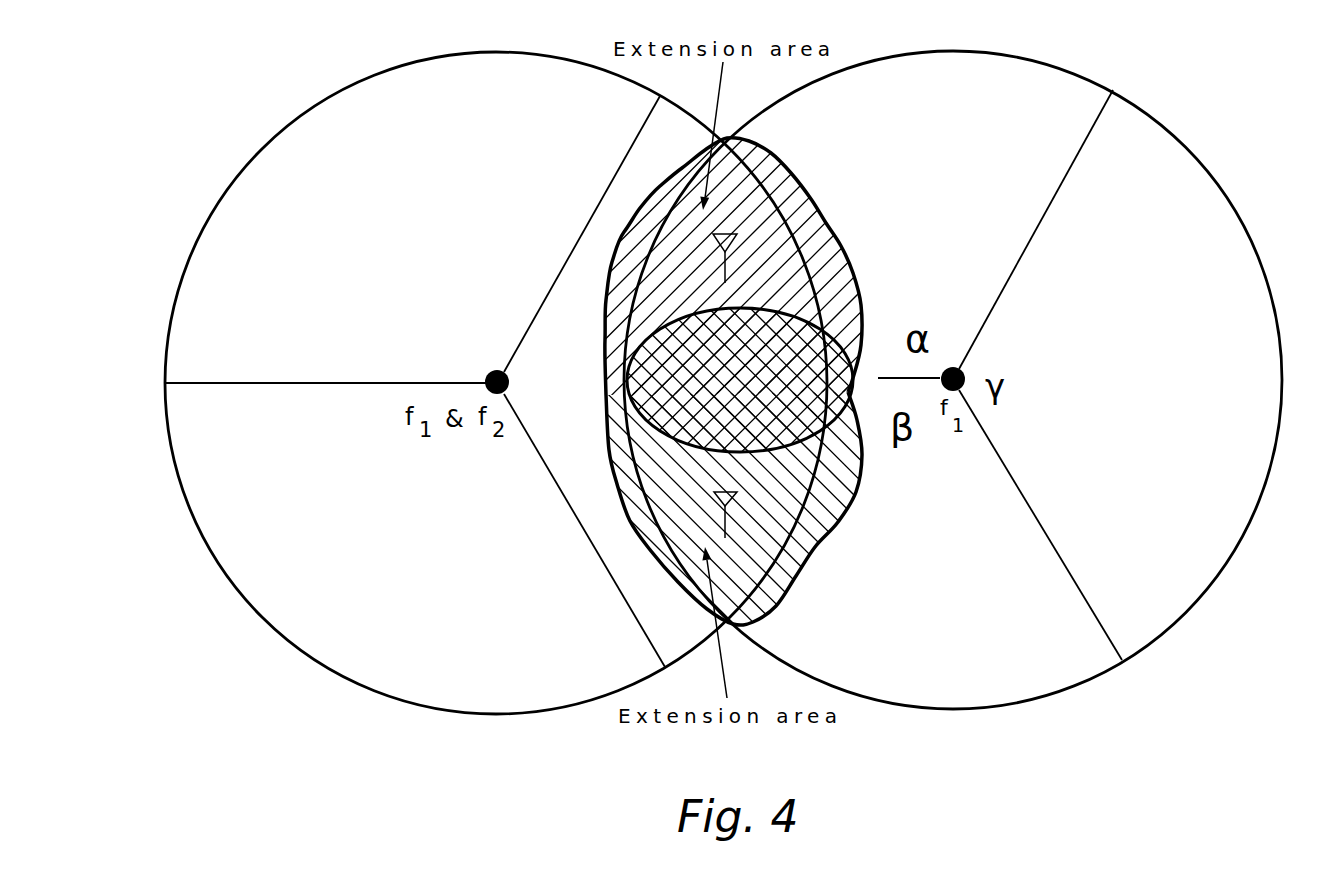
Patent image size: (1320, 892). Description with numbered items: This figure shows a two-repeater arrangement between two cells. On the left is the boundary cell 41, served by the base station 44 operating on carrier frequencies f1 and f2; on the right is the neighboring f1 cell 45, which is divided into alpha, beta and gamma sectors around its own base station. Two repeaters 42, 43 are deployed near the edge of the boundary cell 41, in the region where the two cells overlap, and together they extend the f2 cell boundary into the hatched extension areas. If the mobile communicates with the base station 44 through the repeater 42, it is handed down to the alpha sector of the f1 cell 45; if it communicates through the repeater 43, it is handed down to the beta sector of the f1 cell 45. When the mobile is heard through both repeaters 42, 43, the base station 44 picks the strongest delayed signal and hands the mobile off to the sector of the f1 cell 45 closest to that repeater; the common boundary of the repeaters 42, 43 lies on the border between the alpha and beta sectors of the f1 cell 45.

The boundary cell 41 is at (285, 120).
The repeater 42 is at (752, 250).
The repeater 43 is at (754, 508).
The base station 44 is at (480, 366).
The f1 cell 45 is at (1160, 108).